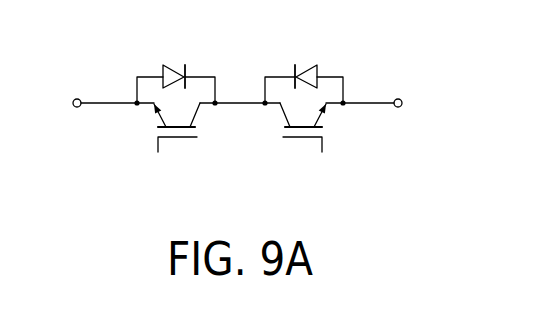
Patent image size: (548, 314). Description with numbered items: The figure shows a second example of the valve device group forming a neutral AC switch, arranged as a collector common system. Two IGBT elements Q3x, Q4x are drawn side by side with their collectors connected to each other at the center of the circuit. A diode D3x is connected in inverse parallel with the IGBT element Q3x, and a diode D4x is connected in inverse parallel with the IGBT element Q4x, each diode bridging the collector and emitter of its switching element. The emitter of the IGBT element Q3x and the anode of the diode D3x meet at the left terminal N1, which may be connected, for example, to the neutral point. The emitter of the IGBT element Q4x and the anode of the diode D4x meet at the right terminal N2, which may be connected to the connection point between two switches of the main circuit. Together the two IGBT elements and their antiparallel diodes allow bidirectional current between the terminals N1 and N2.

The first node terminal N1 is at (78, 98).
The second node terminal N2 is at (398, 98).
The diode D3x is at (170, 64).
The diode D4x is at (316, 64).
The IGBT element Q3x is at (180, 138).
The IGBT element Q4x is at (303, 138).